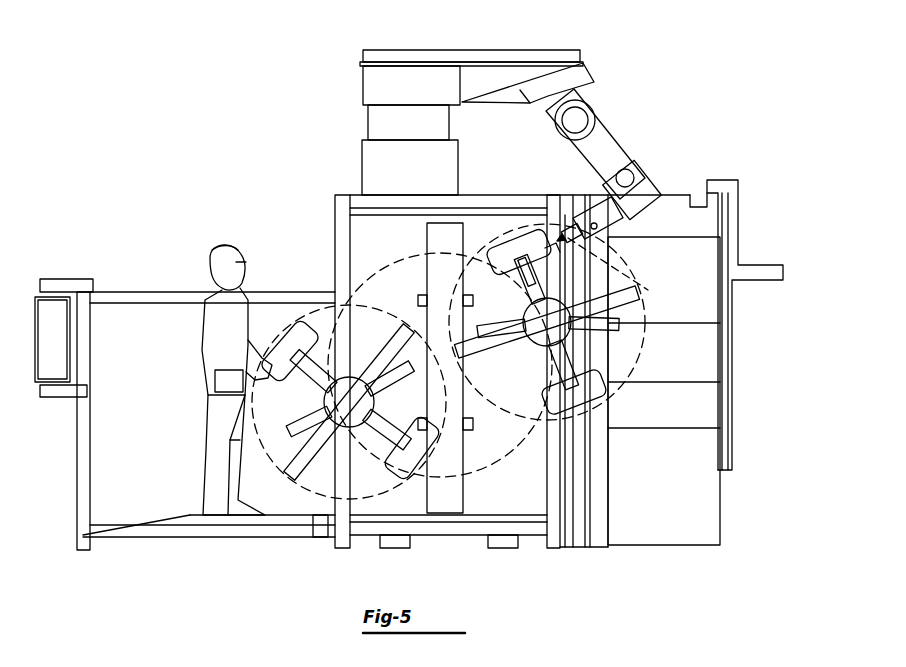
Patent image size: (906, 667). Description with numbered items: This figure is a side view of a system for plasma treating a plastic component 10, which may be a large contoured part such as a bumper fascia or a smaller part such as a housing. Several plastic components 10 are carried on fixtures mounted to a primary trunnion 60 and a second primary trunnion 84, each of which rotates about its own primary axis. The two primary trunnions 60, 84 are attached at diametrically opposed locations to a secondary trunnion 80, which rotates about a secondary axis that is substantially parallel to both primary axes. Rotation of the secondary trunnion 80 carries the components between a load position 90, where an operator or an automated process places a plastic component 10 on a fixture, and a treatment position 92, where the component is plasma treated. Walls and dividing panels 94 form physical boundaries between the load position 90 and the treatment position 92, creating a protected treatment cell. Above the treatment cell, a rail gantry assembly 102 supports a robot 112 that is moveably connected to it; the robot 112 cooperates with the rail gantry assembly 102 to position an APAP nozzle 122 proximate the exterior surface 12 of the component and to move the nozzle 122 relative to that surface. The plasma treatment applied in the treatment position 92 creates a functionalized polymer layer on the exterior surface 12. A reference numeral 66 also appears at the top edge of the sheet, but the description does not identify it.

The plastic component 10 is at (289, 352).
The exterior surface 12 is at (548, 252).
The primary trunnion 60 is at (640, 348).
The reference element 66 is at (300, 0).
The secondary trunnion 80 is at (476, 330).
The second primary trunnion 84 is at (312, 453).
The load position 90 is at (286, 196).
The treatment position 92 is at (520, 245).
The walls and dividing panels 94 is at (445, 242).
The rail gantry assembly 102 is at (531, 61).
The robot 112 is at (646, 188).
The APAP nozzle 122 is at (565, 240).